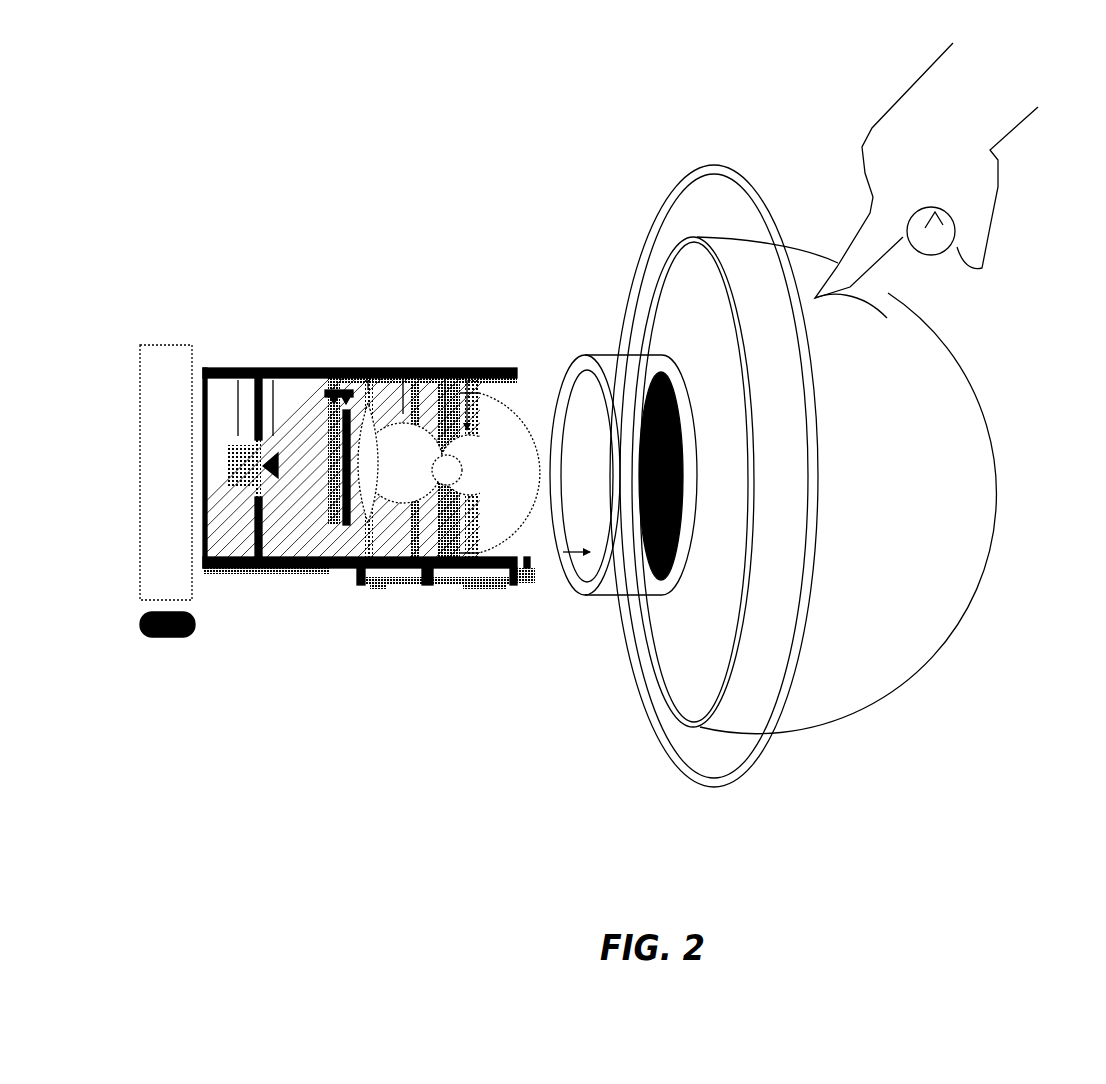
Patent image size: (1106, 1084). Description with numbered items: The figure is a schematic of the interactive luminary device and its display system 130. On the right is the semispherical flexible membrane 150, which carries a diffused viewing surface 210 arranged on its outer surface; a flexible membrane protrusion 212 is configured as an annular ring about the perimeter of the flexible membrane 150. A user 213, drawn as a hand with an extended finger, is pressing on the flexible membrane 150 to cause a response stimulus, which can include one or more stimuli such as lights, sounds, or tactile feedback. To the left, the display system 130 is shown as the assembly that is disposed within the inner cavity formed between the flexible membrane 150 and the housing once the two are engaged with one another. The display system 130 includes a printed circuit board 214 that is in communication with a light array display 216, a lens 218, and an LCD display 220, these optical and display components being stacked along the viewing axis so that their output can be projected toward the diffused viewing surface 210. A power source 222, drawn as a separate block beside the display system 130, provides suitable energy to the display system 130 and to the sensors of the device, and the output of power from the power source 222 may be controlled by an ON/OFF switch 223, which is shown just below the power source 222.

The display system 130 is at (348, 245).
The flexible membrane 150 is at (973, 563).
The diffused viewing surface 210 is at (950, 363).
The flexible membrane protrusion 212 is at (662, 192).
The user 213 is at (872, 128).
The printed circuit board 214 is at (410, 583).
The light array display 216 is at (258, 547).
The lens 218 is at (367, 523).
The LCD display 220 is at (328, 412).
The power source 222 is at (139, 356).
The ON/OFF switch 223 is at (140, 625).